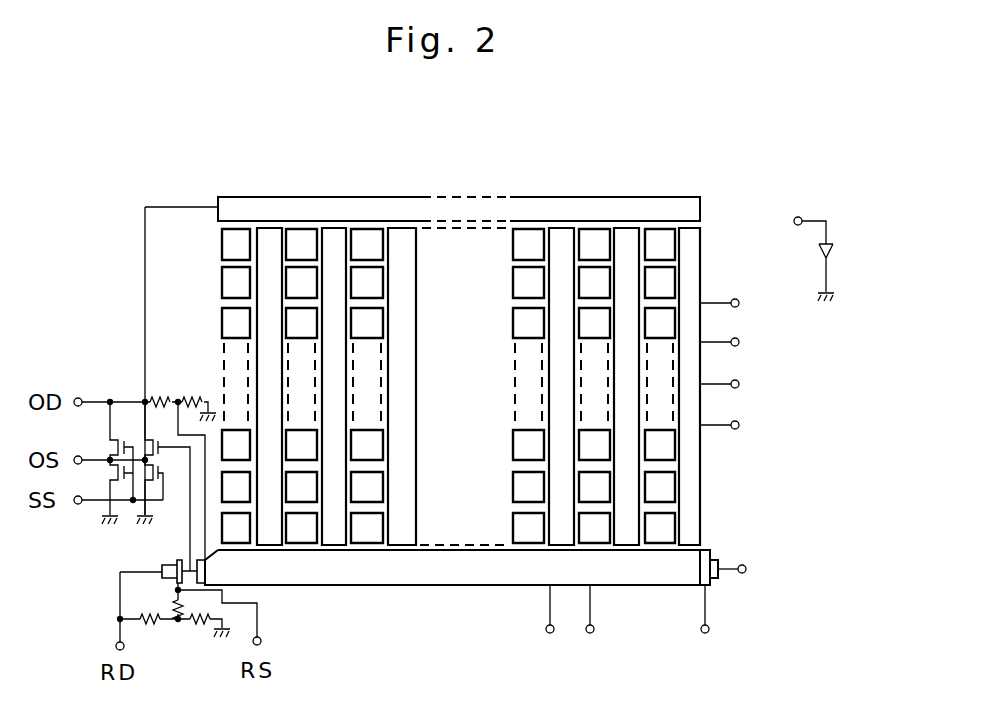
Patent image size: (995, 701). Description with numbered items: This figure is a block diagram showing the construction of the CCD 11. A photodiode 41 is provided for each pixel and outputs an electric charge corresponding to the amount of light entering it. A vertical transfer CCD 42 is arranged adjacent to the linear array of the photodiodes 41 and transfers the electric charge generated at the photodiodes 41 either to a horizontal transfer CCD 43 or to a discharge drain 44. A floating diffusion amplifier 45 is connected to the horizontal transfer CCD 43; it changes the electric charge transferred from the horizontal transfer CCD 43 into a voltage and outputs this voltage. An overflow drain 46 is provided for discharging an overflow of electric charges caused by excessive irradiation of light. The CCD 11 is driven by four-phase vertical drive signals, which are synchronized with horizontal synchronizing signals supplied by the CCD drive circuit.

The CCD 11 is at (127, 203).
The photodiode 41 is at (238, 242).
The vertical transfer CCD 42 is at (265, 375).
The horizontal transfer CCD 43 is at (316, 572).
The discharge drain 44 is at (602, 212).
The floating diffusion amplifier 45 is at (178, 562).
The overflow drain 46 is at (833, 255).